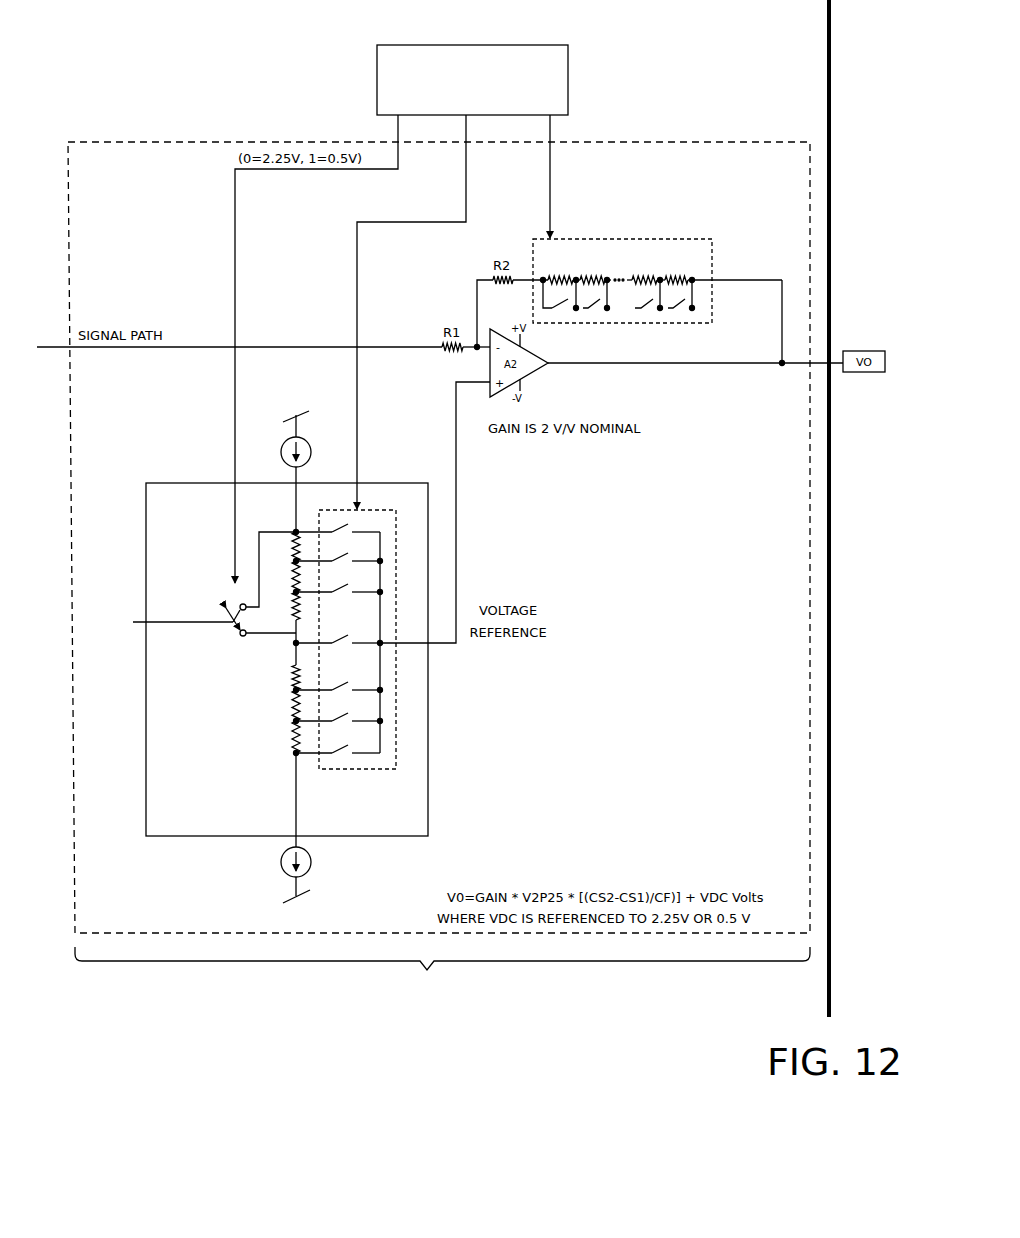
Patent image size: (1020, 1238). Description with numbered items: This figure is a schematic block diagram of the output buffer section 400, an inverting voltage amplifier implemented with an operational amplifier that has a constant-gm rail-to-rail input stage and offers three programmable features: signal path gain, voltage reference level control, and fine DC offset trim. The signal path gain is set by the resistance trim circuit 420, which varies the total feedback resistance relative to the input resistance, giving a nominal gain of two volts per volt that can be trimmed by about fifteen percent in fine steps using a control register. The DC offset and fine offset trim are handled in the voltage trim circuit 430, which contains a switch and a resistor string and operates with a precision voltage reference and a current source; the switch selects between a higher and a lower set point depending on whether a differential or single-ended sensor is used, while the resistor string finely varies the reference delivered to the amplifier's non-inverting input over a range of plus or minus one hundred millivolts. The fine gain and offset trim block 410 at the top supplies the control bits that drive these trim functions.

The output buffer section 400 is at (439, 590).
The fine gain and offset trim 410 is at (548, 45).
The resistance trim circuit 420 is at (692, 239).
The voltage trim circuit 430 is at (165, 483).